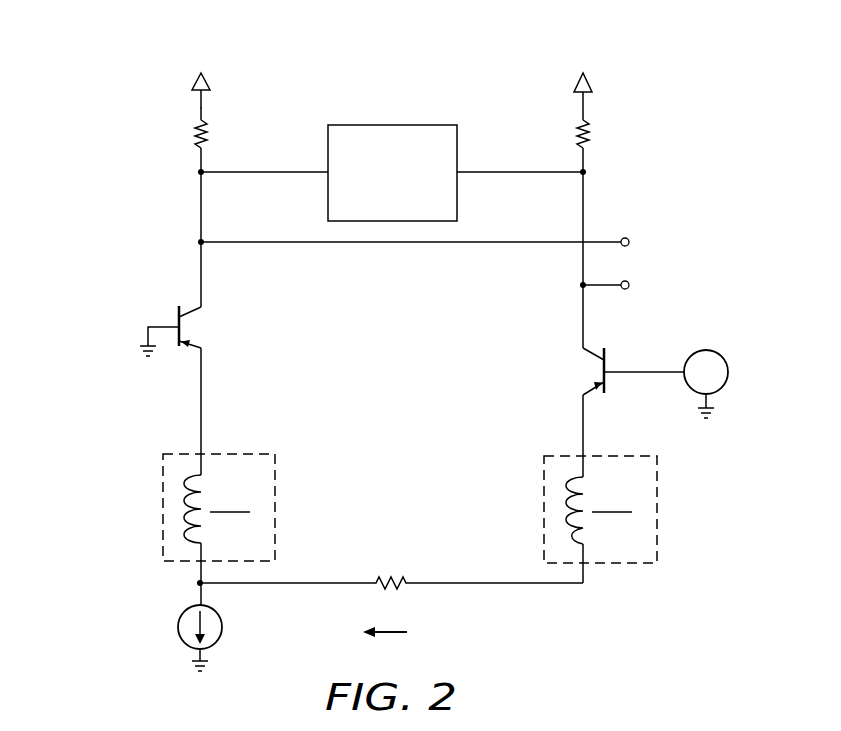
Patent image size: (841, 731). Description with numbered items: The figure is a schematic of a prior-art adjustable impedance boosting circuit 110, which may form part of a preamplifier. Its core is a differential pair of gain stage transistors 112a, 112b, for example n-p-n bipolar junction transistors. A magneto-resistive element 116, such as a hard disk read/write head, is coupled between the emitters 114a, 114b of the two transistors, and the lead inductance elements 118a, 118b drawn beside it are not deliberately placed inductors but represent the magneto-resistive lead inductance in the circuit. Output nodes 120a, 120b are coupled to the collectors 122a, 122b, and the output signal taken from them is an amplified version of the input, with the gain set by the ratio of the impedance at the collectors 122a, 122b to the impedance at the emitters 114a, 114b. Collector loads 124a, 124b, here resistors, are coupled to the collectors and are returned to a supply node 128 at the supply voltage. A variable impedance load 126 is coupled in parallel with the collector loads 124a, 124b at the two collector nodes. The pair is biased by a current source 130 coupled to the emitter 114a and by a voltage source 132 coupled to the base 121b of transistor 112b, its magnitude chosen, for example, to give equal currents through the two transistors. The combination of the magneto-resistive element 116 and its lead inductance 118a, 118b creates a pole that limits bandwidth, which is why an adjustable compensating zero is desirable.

The adjustable impedance boosting circuit 110 is at (108, 190).
The gain stage transistor 112a is at (193, 327).
The gain stage transistor 112b is at (592, 367).
The emitter 114a is at (188, 344).
The emitter 114b is at (596, 390).
The magneto-resistive element 116 is at (392, 578).
The inductance element 118a is at (163, 518).
The inductance element 118b is at (657, 520).
The output node 120a is at (201, 242).
The output node 120b is at (583, 285).
The base 121b is at (615, 370).
The collector 122a is at (199, 305).
The collector 122b is at (590, 350).
The collector load 124a is at (196, 132).
The collector load 124b is at (579, 134).
The variable impedance load 126 is at (392, 125).
The supply voltage node VCC 128 is at (203, 108).
The current source 130 is at (178, 628).
The voltage source 132 is at (700, 350).